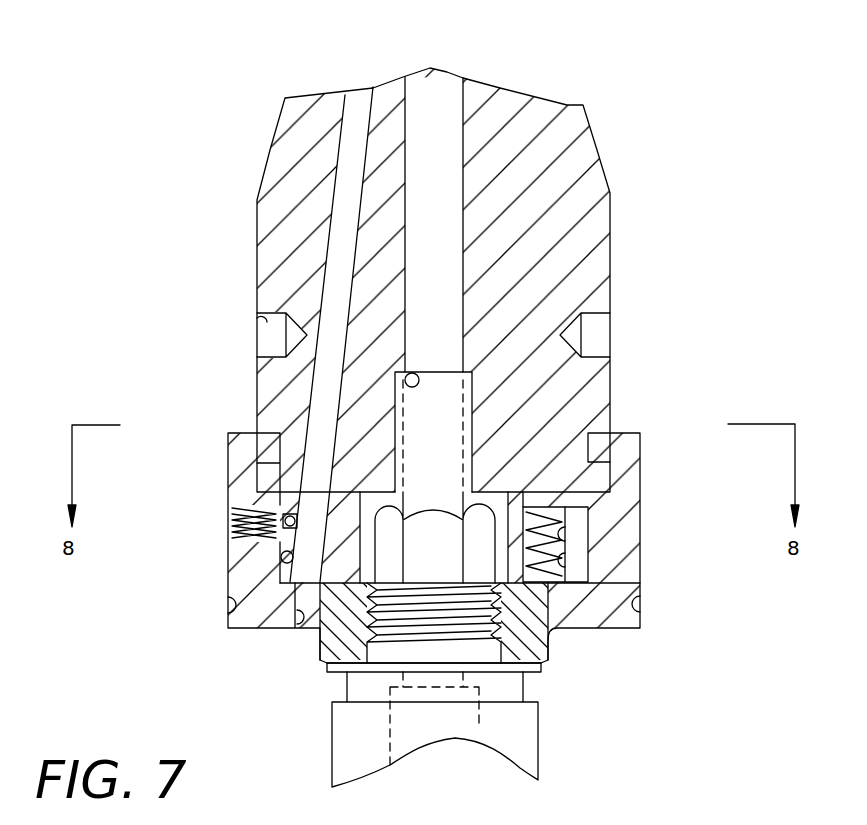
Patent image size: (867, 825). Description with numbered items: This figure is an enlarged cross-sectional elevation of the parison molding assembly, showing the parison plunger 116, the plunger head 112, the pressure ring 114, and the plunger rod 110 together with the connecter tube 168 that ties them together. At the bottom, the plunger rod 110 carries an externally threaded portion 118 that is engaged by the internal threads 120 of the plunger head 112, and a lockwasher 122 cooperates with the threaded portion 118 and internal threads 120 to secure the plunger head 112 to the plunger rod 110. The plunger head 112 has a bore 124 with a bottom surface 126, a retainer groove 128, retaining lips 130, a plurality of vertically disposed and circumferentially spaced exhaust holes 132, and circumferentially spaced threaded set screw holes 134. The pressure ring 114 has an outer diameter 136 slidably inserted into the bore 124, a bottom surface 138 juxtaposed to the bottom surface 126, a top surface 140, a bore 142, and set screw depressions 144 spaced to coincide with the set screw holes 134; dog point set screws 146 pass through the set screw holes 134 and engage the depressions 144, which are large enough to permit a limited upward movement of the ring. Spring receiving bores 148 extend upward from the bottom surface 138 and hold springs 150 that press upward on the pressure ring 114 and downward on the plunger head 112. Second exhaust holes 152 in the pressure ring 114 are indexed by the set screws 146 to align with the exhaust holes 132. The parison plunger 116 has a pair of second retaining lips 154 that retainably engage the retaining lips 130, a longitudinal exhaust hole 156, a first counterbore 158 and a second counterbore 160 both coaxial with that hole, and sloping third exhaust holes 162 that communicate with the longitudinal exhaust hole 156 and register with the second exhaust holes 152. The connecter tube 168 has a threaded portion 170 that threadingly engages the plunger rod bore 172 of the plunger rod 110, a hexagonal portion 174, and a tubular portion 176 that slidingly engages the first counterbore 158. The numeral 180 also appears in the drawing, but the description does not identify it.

The plunger rod 110 is at (347, 765).
The plunger head 112 is at (640, 622).
The pressure ring 114 is at (640, 558).
The parison plunger 116 is at (600, 134).
The externally threaded portion 118 is at (548, 652).
The internal threads 120 is at (552, 635).
The lockwasher 122 is at (543, 668).
The bore 124 is at (566, 530).
The bottom surface 126 is at (320, 600).
The retainer groove 128 is at (590, 507).
The retaining lips 130 is at (580, 425).
The exhaust holes 132 is at (320, 583).
The threaded set screw holes 134 is at (228, 535).
The outer diameter 136 is at (283, 582).
The bottom surface 138 is at (310, 560).
The top surface 140 is at (535, 440).
The bore 142 is at (562, 320).
The set screw depressions 144 is at (238, 447).
The dog point set screws 146 is at (232, 527).
The spring receiving bores 148 is at (565, 540).
The springs 150 is at (562, 562).
The second exhaust holes 152 is at (281, 557).
The second retaining lips 154 is at (290, 514).
The longitudinal exhaust hole 156 is at (460, 92).
The first counterbore 158 is at (405, 372).
The second counterbore 160 is at (393, 450).
The third exhaust holes 162 is at (363, 88).
The connecter tube 168 is at (433, 370).
The threaded portion 170 is at (425, 618).
The plunger rod bore 172 is at (472, 712).
The hexagonal portion 174 is at (477, 552).
The tubular portion 176 is at (505, 450).
The left port 180 is at (257, 323).